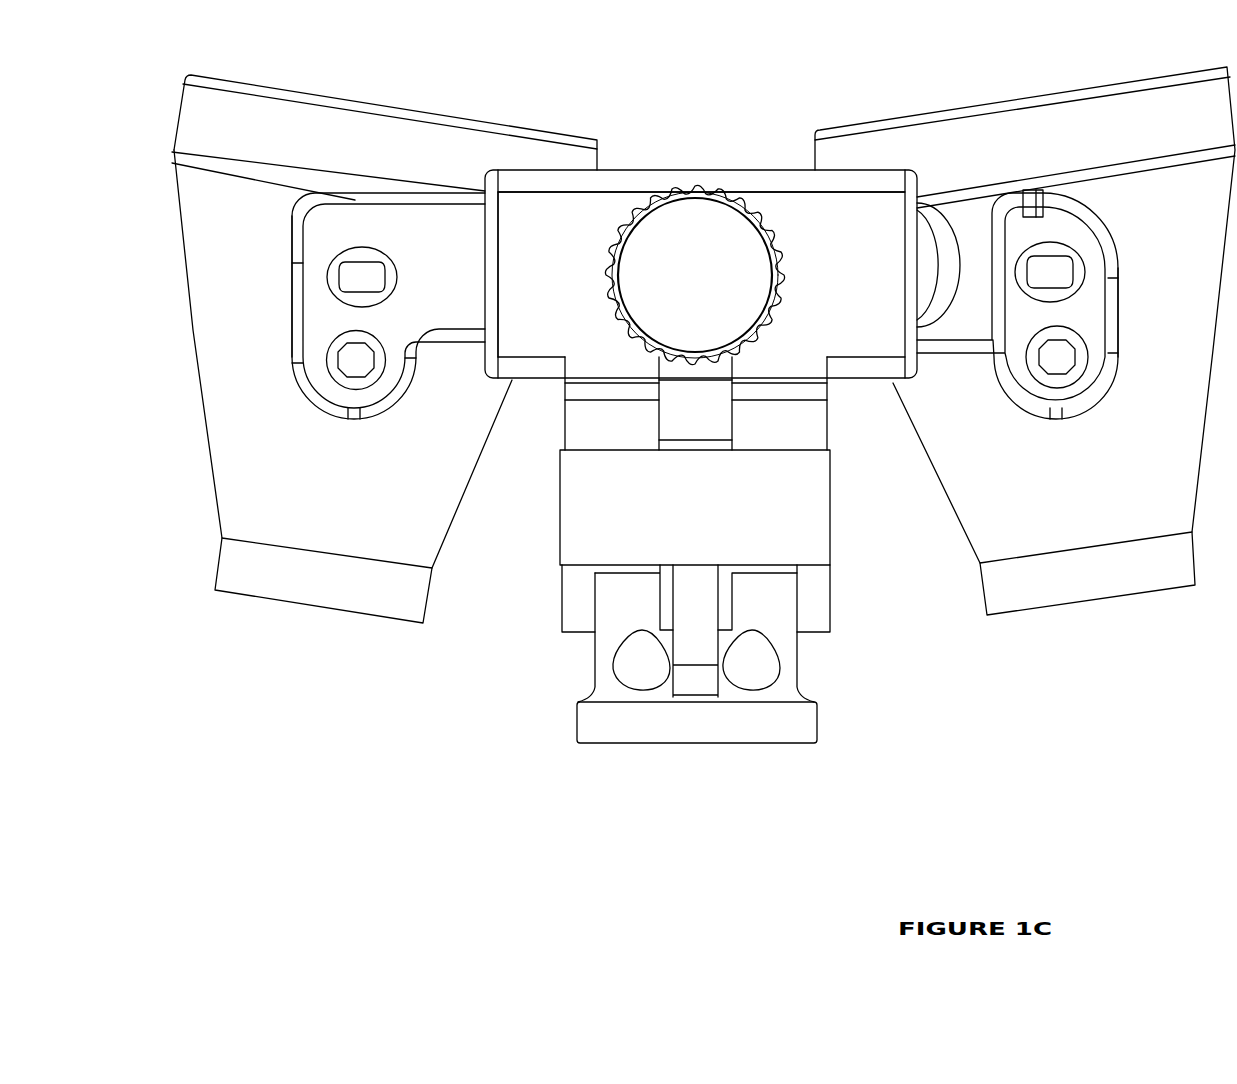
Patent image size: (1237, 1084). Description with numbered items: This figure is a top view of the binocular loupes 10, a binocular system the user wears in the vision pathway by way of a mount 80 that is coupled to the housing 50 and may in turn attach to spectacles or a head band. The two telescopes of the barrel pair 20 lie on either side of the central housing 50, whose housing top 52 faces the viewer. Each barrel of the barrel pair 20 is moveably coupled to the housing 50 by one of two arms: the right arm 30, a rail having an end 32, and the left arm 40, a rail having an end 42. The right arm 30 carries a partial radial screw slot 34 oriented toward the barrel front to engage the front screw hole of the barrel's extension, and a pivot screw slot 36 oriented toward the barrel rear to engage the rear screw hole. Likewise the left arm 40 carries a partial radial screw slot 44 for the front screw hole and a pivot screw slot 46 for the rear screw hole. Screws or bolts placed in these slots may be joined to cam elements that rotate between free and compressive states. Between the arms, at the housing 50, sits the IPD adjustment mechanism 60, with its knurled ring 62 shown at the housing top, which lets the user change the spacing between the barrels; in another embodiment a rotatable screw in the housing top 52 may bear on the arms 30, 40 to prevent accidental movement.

The binocular loupes 10 is at (663, 844).
The barrel pair 20 is at (327, 603).
The right arm 30 is at (1048, 419).
The end 32 is at (1118, 288).
The partial radial screw slot 34 is at (1050, 267).
The pivot screw slot 36 is at (1058, 355).
The left arm 40 is at (359, 419).
The end 42 is at (290, 271).
The partial radial screw slot 44 is at (358, 273).
The pivot screw slot 46 is at (356, 353).
The housing 50 is at (798, 252).
The housing top 52 is at (558, 272).
The IPD adjustment mechanism 60 is at (647, 185).
The knurled ring 62 is at (745, 188).
The mount 80 is at (830, 525).